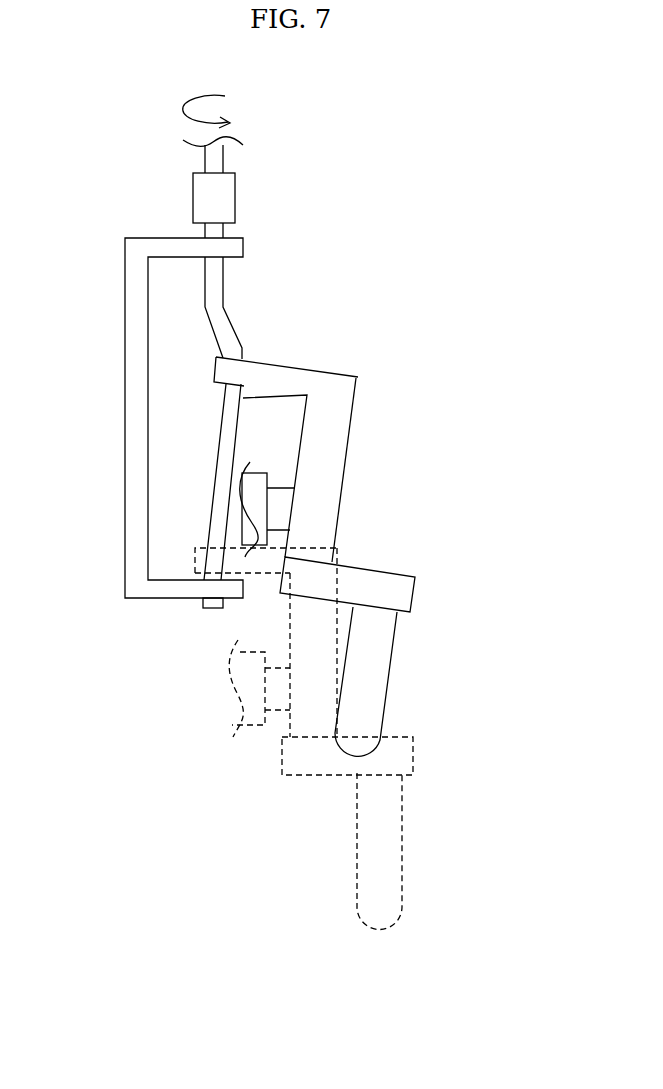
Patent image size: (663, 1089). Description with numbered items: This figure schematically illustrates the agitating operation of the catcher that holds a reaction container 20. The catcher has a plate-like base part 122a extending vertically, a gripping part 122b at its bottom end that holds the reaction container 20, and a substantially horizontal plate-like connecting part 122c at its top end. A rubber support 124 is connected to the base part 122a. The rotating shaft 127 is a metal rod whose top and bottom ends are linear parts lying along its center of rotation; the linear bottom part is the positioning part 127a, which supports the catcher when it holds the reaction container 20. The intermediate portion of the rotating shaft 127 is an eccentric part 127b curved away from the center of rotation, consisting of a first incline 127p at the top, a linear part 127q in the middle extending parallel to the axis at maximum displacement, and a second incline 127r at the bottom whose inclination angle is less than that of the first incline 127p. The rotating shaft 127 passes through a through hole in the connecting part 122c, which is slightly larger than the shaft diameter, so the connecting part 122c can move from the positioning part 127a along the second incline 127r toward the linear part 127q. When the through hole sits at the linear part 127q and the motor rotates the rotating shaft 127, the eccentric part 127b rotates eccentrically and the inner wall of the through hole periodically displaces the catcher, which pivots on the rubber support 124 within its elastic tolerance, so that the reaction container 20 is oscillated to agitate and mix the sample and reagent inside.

The reaction container 20 is at (392, 653).
The base part 122a is at (333, 523).
The gripping part 122b is at (395, 572).
The connecting part 122c is at (214, 376).
The rubber support 124 is at (268, 490).
The rotating shaft 127 is at (225, 278).
The positioning part 127a is at (203, 560).
The eccentric part 127b is at (363, 436).
The first incline 127p is at (240, 338).
The linear part 127q is at (243, 398).
The second incline 127r is at (319, 482).